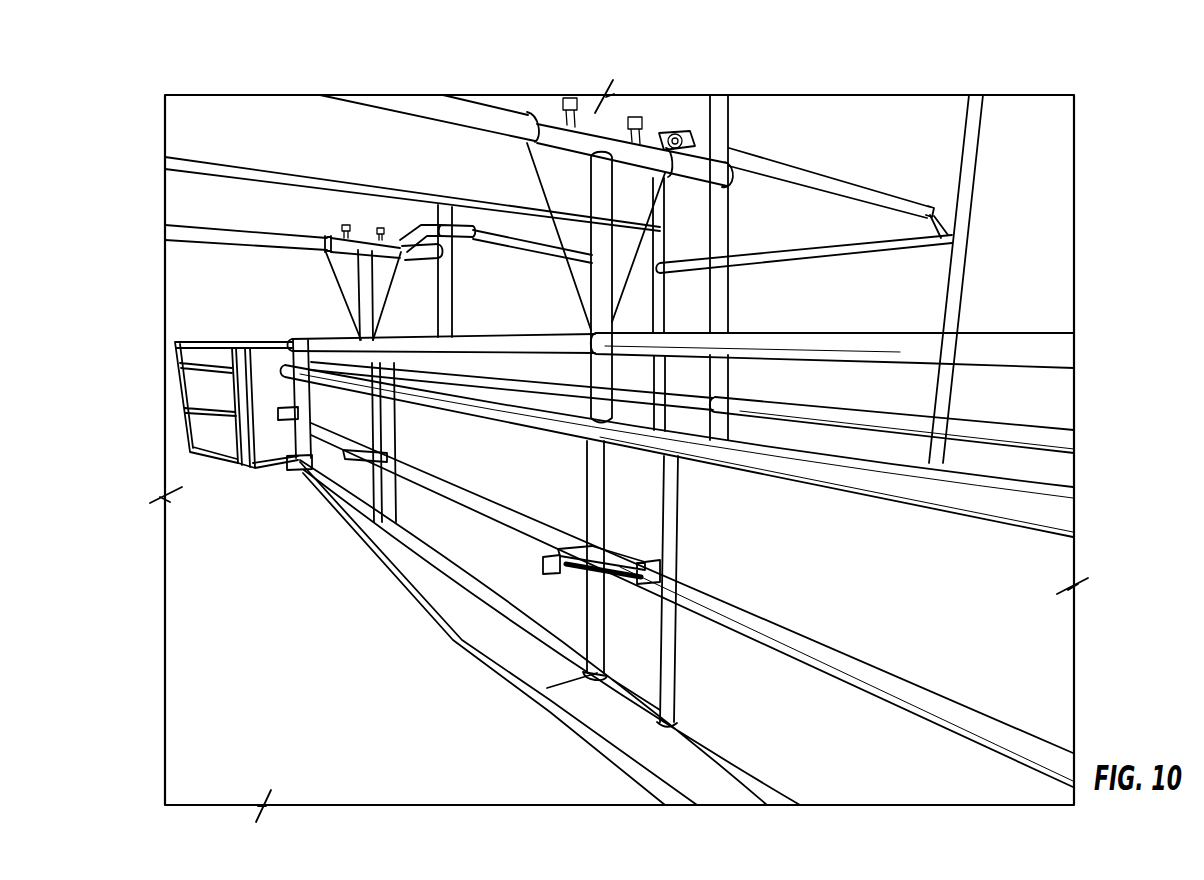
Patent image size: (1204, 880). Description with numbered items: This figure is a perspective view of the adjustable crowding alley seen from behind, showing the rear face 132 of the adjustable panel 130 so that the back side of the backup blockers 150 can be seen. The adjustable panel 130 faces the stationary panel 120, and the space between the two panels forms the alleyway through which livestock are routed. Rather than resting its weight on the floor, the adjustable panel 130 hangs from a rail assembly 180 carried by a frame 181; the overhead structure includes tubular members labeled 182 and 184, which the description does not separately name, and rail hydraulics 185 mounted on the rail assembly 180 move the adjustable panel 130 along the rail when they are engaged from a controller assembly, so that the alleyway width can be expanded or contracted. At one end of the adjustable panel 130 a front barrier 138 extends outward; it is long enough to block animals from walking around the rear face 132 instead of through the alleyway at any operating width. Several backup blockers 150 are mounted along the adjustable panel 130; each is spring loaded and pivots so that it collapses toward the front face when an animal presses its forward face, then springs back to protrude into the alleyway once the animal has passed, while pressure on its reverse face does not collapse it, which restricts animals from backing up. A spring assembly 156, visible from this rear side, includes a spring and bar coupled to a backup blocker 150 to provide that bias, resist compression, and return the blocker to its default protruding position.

The stationary panel 120 is at (1057, 446).
The adjustable panel 130 is at (462, 636).
The rear face 132 is at (1057, 687).
The front barrier 138 is at (272, 362).
The backup blocker 150 is at (297, 462).
The spring assembly 156 is at (570, 577).
The rail assembly 180 is at (340, 240).
The frame 181 is at (723, 130).
The tube section 182 is at (216, 237).
The tube 184 is at (498, 110).
The rail hydraulics 185 is at (678, 136).